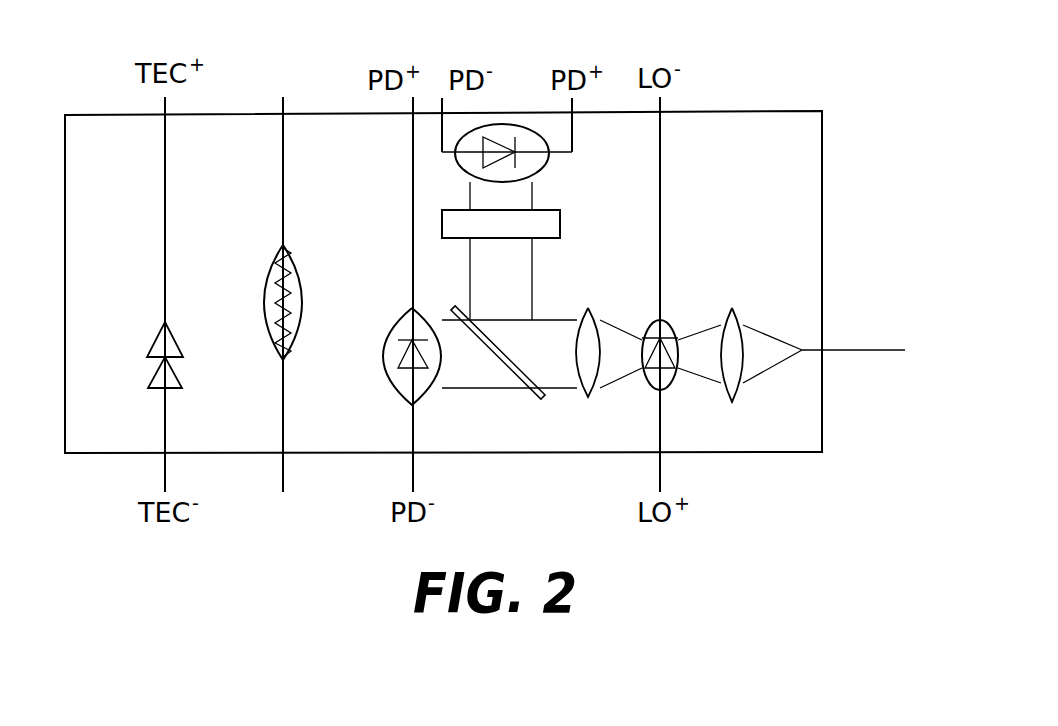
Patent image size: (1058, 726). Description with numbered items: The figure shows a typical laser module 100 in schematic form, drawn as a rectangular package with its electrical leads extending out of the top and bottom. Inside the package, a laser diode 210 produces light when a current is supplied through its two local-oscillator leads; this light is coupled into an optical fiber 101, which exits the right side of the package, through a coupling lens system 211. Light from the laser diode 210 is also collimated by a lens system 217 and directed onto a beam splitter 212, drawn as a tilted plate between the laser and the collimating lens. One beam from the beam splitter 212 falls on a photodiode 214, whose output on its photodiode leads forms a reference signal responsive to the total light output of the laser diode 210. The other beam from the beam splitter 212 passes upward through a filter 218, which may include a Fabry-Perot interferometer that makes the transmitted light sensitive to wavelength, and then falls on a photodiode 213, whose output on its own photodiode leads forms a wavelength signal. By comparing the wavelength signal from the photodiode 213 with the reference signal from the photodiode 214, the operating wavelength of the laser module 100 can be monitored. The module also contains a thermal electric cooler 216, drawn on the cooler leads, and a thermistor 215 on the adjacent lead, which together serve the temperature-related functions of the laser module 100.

The laser module 100 is at (765, 111).
The optical fiber 101 is at (863, 350).
The laser diode 210 is at (693, 307).
The coupling lens system 211 is at (737, 313).
The beam splitter 212 is at (543, 400).
The photodiode 213 is at (547, 165).
The photodiode 214 is at (422, 313).
The thermistor 215 is at (300, 275).
The thermal electric cooler 216 is at (197, 308).
The lens system 217 is at (588, 308).
The filter 218 is at (560, 222).